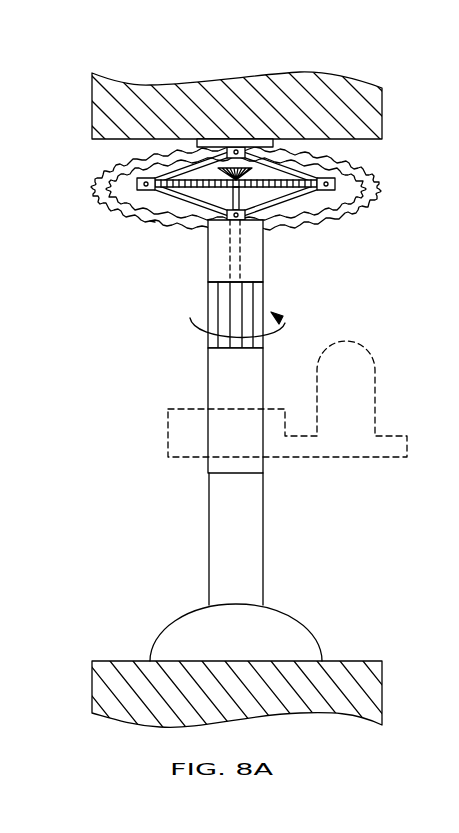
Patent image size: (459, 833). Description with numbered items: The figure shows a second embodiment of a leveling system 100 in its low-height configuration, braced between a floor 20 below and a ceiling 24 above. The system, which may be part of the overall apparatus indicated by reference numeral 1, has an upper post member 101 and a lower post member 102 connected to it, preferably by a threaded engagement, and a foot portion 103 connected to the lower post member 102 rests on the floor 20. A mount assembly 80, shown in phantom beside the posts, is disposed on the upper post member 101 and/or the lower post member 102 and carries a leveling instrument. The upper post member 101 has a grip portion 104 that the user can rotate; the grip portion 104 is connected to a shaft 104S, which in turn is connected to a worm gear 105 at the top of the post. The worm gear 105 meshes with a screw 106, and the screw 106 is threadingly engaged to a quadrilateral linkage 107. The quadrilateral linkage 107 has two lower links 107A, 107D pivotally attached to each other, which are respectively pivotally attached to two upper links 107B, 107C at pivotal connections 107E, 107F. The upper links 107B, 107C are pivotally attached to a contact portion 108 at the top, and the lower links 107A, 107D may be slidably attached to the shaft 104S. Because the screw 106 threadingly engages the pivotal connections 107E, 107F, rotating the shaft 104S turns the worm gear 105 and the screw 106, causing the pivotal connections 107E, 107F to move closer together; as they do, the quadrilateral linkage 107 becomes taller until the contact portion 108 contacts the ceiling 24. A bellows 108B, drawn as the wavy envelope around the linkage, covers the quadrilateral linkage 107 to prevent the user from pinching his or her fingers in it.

The surgical system 1 is at (455, 172).
The floor 20 is at (350, 668).
The ceiling 24 is at (293, 83).
The mount assembly 80 is at (185, 432).
The leveling system 100 is at (225, 440).
The upper post member 101 is at (252, 375).
The lower post member 102 is at (252, 517).
The foot portion 103 is at (292, 630).
The grip portion 104 is at (257, 292).
The shaft 104S is at (234, 257).
The worm gear 105 is at (255, 173).
The screw 106 is at (258, 189).
The quadrilateral linkage 107 is at (86, 186).
The lower link 107A is at (163, 198).
The upper link 107B is at (180, 168).
The upper link 107C is at (315, 173).
The lower link 107D is at (307, 193).
The pivotal connection 107E is at (130, 194).
The pivotal connection 107F is at (368, 196).
The contact portion 108 is at (237, 145).
The bellows 108B is at (154, 224).